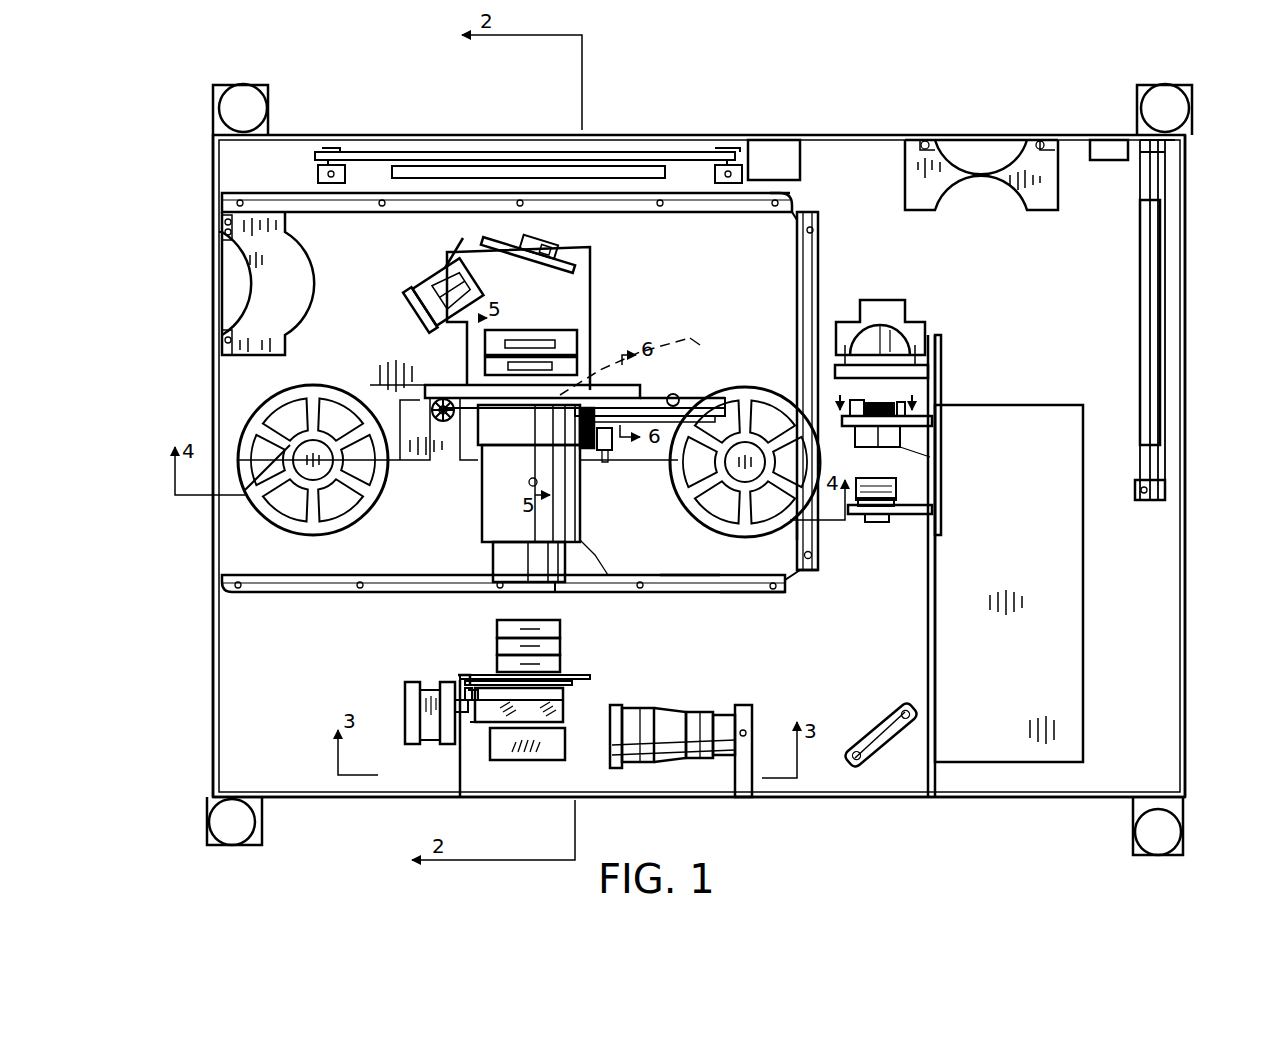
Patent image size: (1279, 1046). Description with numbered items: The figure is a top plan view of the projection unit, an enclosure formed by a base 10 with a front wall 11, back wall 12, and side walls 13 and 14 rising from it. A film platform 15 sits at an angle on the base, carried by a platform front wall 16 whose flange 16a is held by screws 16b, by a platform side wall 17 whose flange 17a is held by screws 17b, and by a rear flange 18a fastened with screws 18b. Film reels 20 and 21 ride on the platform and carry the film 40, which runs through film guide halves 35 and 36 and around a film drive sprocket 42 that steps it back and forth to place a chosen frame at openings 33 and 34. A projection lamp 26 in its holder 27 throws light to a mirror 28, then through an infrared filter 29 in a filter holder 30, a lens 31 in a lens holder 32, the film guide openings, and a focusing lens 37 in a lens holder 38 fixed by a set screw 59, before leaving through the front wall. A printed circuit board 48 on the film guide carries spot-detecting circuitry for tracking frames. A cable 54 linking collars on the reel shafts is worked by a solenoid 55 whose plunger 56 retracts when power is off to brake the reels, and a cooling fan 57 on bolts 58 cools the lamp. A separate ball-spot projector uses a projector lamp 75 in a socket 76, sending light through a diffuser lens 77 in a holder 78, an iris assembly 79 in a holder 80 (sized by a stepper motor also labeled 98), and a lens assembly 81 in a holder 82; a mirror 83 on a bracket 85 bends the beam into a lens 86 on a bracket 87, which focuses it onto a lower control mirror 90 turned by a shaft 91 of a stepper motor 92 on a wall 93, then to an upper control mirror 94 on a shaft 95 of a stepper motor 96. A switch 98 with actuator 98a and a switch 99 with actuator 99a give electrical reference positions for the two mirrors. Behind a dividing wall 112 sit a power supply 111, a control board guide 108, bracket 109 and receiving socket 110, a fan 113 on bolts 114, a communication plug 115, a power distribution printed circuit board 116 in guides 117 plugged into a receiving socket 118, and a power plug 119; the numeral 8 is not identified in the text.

The base 10 is at (216, 745).
The front wall 11 is at (318, 798).
The back wall 12 is at (447, 150).
The side wall 13 is at (212, 652).
The side wall 14 is at (1186, 694).
The film platform 15 is at (795, 578).
The platform front wall 16 is at (738, 590).
The flange 16a is at (716, 594).
The screws 16b is at (660, 592).
The platform side wall 17 is at (816, 552).
The flange 17a is at (818, 542).
The screws 17b is at (815, 572).
The rear flange 18a is at (698, 204).
The screws 18b is at (778, 205).
The film reel 20 is at (265, 512).
The film reel 21 is at (748, 395).
The projection lamp 26 is at (447, 262).
The holder 27 is at (428, 272).
The mirror 28 is at (518, 248).
The infrared filter 29 is at (572, 318).
The filter holder 30 is at (522, 338).
The lens 31 is at (560, 358).
The lens holder 32 is at (492, 378).
The opening 33 is at (583, 372).
The opening 34 is at (648, 398).
The film guide half 35 is at (675, 398).
The film guide half 36 is at (680, 398).
The lens 37 is at (555, 590).
The lens holder 38 is at (608, 578).
The film 40 is at (375, 385).
The film drive sprocket 42 is at (404, 460).
The printed circuit board 48 is at (587, 450).
The cable 54 is at (662, 470).
The solenoid 55 is at (612, 462).
The plunger 56 is at (598, 470).
The cooling fan 57 is at (235, 278).
The bolts 58 is at (218, 228).
The set screw 59 is at (530, 485).
The projector lamp 75 is at (912, 325).
The socket 76 is at (878, 300).
The diffuser lens 77 is at (920, 358).
The holder 78 is at (942, 372).
The iris assembly 79 is at (915, 416).
The holder 80 is at (905, 440).
The lens assembly 81 is at (900, 482).
The holder 82 is at (888, 522).
The mirror 83 is at (868, 725).
The bracket 85 is at (886, 745).
The lens 86 is at (665, 745).
The bracket 87 is at (748, 785).
The lower control mirror 90 is at (555, 760).
The shaft 91 is at (572, 684).
The stepper motor 92 is at (560, 645).
The wall 93 is at (588, 675).
The upper control mirror 94 is at (560, 715).
The shaft 95 is at (468, 705).
The stepper motor 96 is at (430, 745).
The switch 98 is at (905, 435).
The actuator 98a is at (476, 686).
The switch 99 is at (408, 690).
The actuator 99a is at (455, 690).
The guide 108 is at (1168, 488).
The bracket 109 is at (1172, 146).
The receiving socket 110 is at (1160, 275).
The power supply 111 is at (1075, 608).
The dividing wall 112 is at (936, 645).
The fan 113 is at (1025, 198).
The bolts 114 is at (1040, 138).
The plug 115 is at (1118, 162).
The printed circuit board 116 is at (485, 158).
The guides 117 is at (333, 148).
The receiving socket 118 is at (596, 166).
The plug 119 is at (790, 140).
The section arrows 8 is at (874, 405).